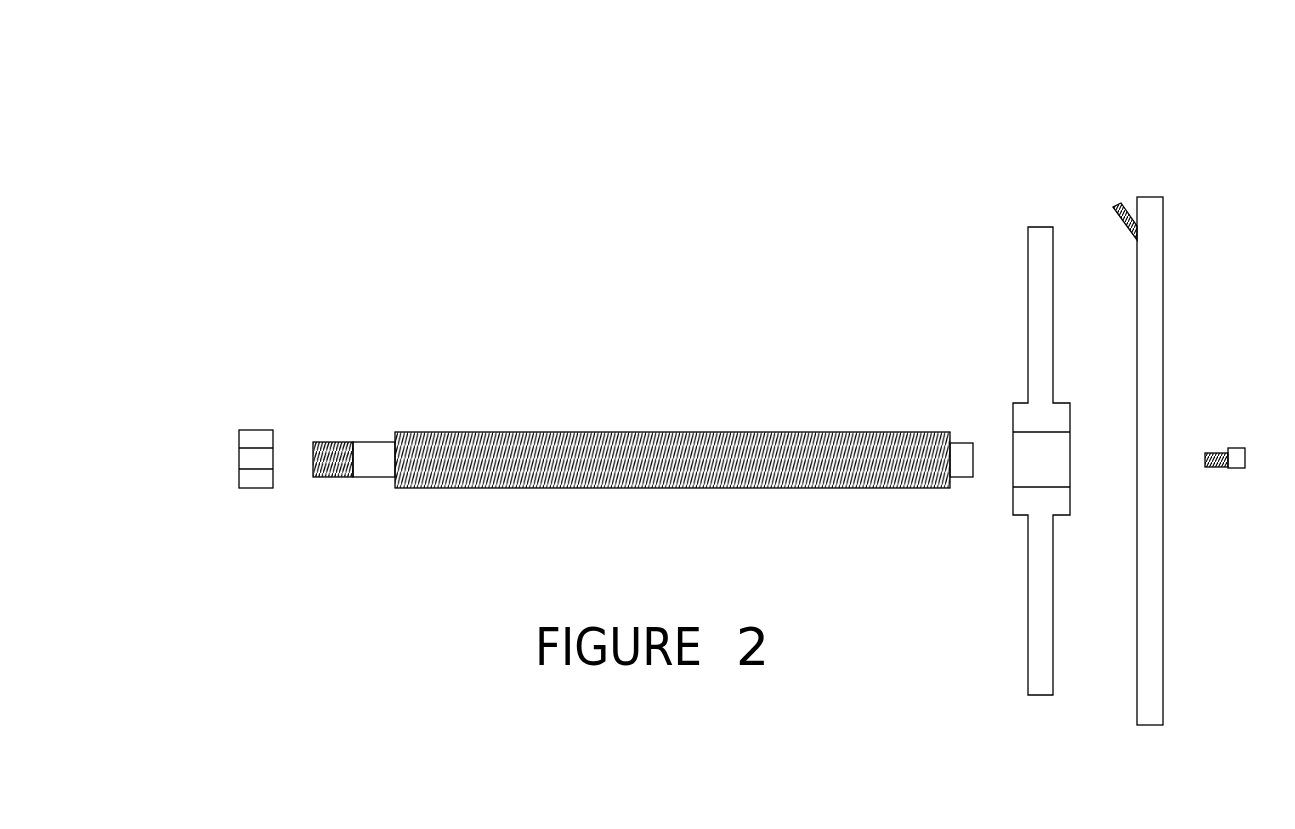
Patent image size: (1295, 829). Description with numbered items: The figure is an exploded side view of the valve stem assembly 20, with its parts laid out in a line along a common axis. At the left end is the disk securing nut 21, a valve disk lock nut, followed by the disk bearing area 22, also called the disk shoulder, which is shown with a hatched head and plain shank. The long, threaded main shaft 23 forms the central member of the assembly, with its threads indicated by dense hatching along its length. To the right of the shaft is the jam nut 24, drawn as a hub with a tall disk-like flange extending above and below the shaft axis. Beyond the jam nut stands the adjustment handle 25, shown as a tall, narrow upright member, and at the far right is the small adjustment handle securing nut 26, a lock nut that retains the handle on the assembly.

The valve stem assembly 20 is at (719, 381).
The disk securing nut 21 is at (270, 432).
The disk bearing area 22 is at (358, 440).
The main shaft 23 is at (498, 432).
The jam nut 24 is at (1028, 390).
The adjustment handle 25 is at (1132, 236).
The adjustment handle securing nut 26 is at (1233, 447).